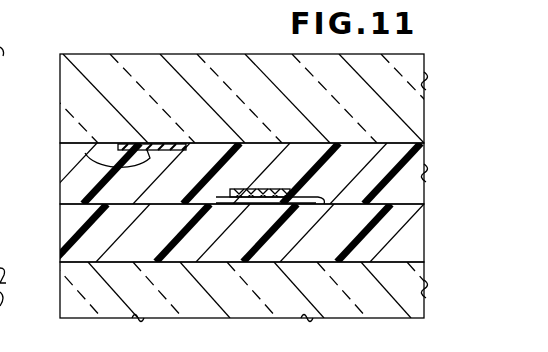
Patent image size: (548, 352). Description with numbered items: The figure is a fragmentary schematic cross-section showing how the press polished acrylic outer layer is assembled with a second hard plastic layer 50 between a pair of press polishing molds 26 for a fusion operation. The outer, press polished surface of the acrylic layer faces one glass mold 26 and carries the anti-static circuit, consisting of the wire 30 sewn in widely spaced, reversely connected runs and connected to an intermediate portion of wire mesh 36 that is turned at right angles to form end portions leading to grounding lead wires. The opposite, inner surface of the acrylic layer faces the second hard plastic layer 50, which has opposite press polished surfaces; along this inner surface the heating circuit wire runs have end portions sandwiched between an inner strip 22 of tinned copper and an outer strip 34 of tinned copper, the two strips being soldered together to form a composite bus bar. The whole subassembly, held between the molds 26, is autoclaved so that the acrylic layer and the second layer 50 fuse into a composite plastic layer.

The press polishing mold 26 is at (62, 112).
The inner strip of tinned copper 22 is at (307, 197).
The second hard plastic layer 50 is at (414, 237).
The wire mesh 36 is at (118, 147).
The wire 30 is at (115, 167).
The outer strip of tinned copper 34 is at (262, 200).